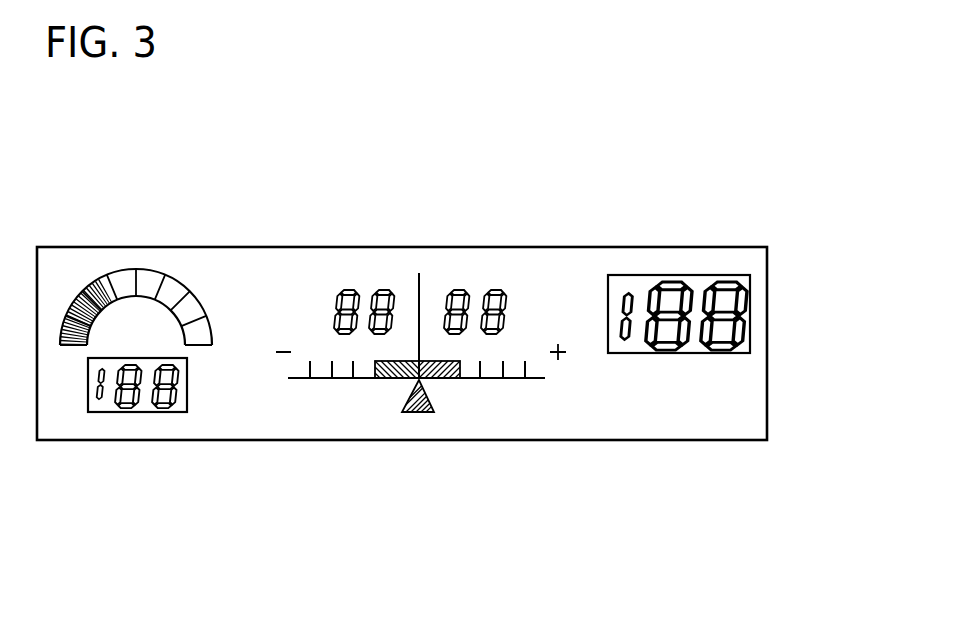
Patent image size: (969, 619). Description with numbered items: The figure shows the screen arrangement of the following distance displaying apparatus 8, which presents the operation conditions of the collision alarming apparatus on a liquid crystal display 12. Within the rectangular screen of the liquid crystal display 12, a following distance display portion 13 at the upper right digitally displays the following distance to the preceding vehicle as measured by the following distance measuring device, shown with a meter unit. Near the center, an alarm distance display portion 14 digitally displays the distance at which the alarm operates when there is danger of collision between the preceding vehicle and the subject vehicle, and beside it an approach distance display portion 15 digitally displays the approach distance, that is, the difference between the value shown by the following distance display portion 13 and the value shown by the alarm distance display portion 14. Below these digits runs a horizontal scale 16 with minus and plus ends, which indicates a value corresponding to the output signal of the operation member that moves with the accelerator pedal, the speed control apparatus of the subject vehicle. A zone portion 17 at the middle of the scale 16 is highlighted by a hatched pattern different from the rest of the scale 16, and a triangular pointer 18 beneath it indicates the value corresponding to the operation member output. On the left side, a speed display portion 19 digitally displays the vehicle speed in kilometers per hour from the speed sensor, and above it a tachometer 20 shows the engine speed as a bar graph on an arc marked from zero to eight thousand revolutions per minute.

The following distance displaying apparatus 8 is at (451, 349).
The liquid crystal display 12 is at (657, 415).
The following distance display portion 13 is at (702, 273).
The alarm distance display portion 14 is at (505, 282).
The approach distance display portion 15 is at (357, 287).
The scale 16 is at (299, 380).
The zone portion 17 is at (472, 357).
The pointer 18 is at (421, 414).
The speed display portion 19 is at (117, 414).
The tachometer 20 is at (151, 269).